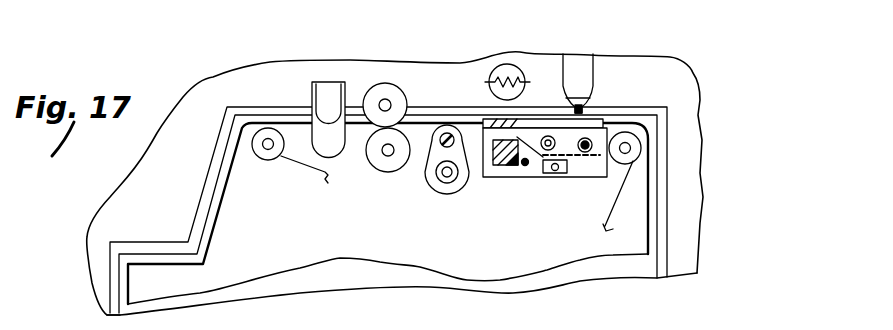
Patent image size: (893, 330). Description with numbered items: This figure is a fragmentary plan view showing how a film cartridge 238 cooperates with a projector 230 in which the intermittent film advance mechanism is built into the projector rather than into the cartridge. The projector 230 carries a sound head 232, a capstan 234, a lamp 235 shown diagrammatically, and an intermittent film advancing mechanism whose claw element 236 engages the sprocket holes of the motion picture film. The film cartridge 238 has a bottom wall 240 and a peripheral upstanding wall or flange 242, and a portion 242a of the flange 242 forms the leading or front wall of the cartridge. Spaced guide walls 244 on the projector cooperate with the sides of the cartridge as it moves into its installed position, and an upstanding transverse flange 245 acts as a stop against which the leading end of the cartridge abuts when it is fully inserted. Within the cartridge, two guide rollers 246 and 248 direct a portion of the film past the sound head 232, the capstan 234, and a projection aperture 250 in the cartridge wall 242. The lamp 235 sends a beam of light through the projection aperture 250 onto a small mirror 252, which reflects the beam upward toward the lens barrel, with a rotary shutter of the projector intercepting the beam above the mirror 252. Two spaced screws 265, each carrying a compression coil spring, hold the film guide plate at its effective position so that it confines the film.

The projector 230 is at (675, 93).
The sound head 232 is at (326, 88).
The capstan 234 is at (392, 92).
The lamp 235 is at (517, 65).
The claw element 236 is at (577, 103).
The film cartridge 238 is at (577, 258).
The bottom wall 240 is at (443, 183).
The peripheral upstanding wall or flange 242 is at (208, 223).
The portion of the flange 242a is at (537, 120).
The guide walls 244 is at (212, 172).
The upstanding transverse flange 245 is at (430, 108).
The guide roller 246 is at (258, 157).
The guide roller 248 is at (631, 148).
The projection aperture 250 is at (503, 125).
The mirror 252 is at (510, 158).
The screws 265 is at (584, 153).